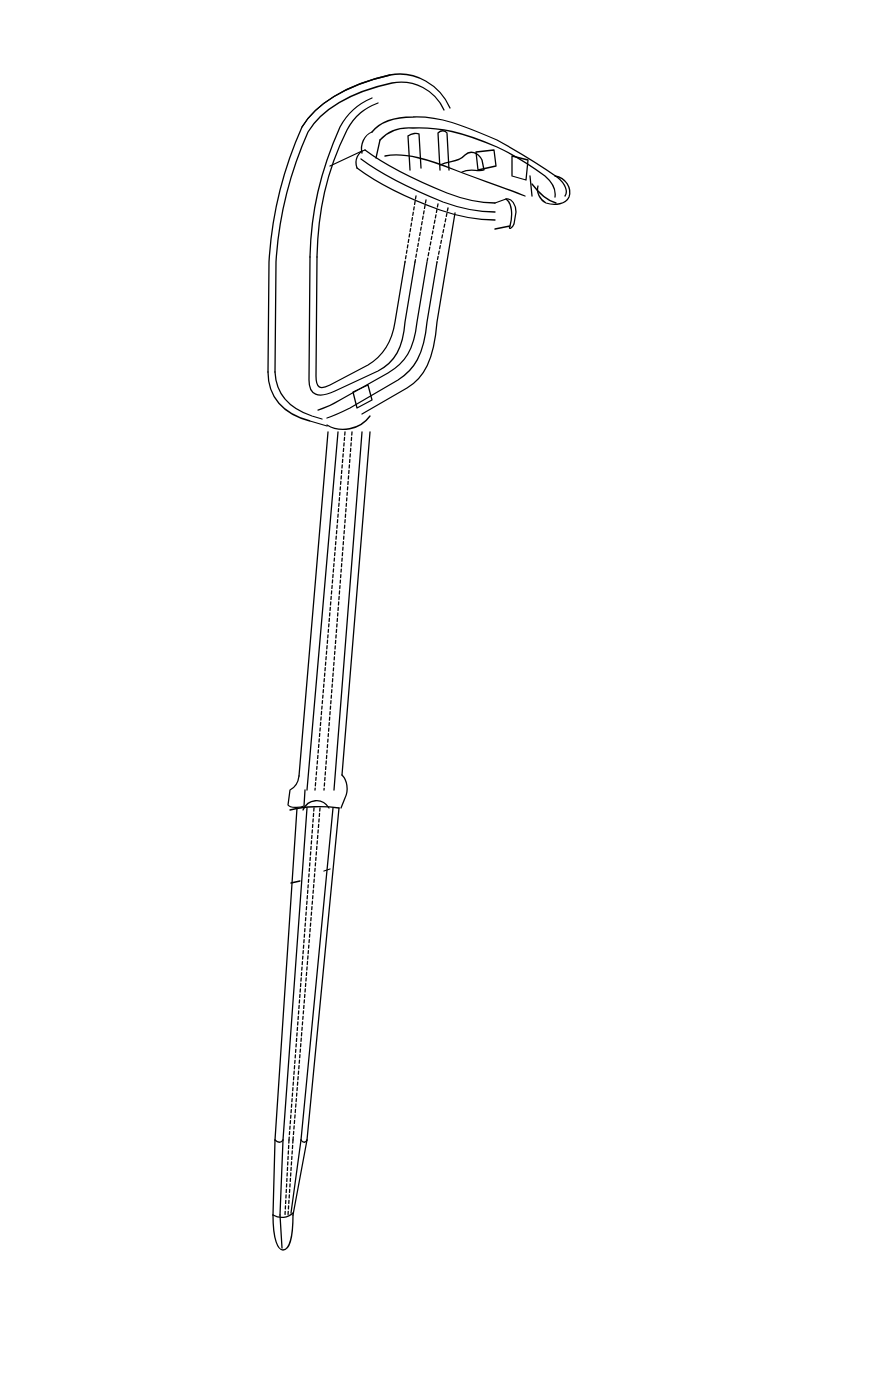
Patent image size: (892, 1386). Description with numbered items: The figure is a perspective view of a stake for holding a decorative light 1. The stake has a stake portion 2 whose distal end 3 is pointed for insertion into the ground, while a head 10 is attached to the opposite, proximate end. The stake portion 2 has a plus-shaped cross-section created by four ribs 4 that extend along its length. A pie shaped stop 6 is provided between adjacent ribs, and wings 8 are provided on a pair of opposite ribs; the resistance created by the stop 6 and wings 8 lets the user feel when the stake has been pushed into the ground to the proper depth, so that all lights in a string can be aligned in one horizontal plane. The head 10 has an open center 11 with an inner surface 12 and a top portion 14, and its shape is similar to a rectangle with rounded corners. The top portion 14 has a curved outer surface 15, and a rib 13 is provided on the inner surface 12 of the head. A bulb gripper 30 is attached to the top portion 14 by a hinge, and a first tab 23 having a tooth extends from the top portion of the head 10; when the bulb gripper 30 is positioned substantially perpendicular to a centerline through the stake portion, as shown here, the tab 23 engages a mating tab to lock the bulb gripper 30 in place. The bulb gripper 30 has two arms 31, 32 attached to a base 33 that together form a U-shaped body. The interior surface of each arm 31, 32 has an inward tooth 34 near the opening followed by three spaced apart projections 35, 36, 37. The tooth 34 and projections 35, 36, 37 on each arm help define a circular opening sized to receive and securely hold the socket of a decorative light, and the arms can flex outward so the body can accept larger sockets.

The stake for holding a decorative light 1 is at (228, 472).
The stake portion 2 is at (272, 648).
The distal end 3 is at (273, 1232).
The ribs 4 is at (350, 716).
The pie shaped stop 6 is at (328, 806).
The wings 8 is at (348, 772).
The head 10 is at (228, 180).
The open center 11 is at (373, 294).
The inner surface 12 is at (431, 266).
The rib 13 is at (403, 352).
The top portion 14 is at (300, 132).
The curved outer surface 15 is at (378, 84).
The first tab 23 is at (366, 124).
The bulb gripper 30 is at (498, 122).
The arm 31 is at (472, 112).
The arm 32 is at (413, 193).
The base 33 is at (423, 108).
The inward tooth 34 is at (546, 202).
The projection 35 is at (530, 174).
The projection 36 is at (516, 158).
The projection 37 is at (492, 150).